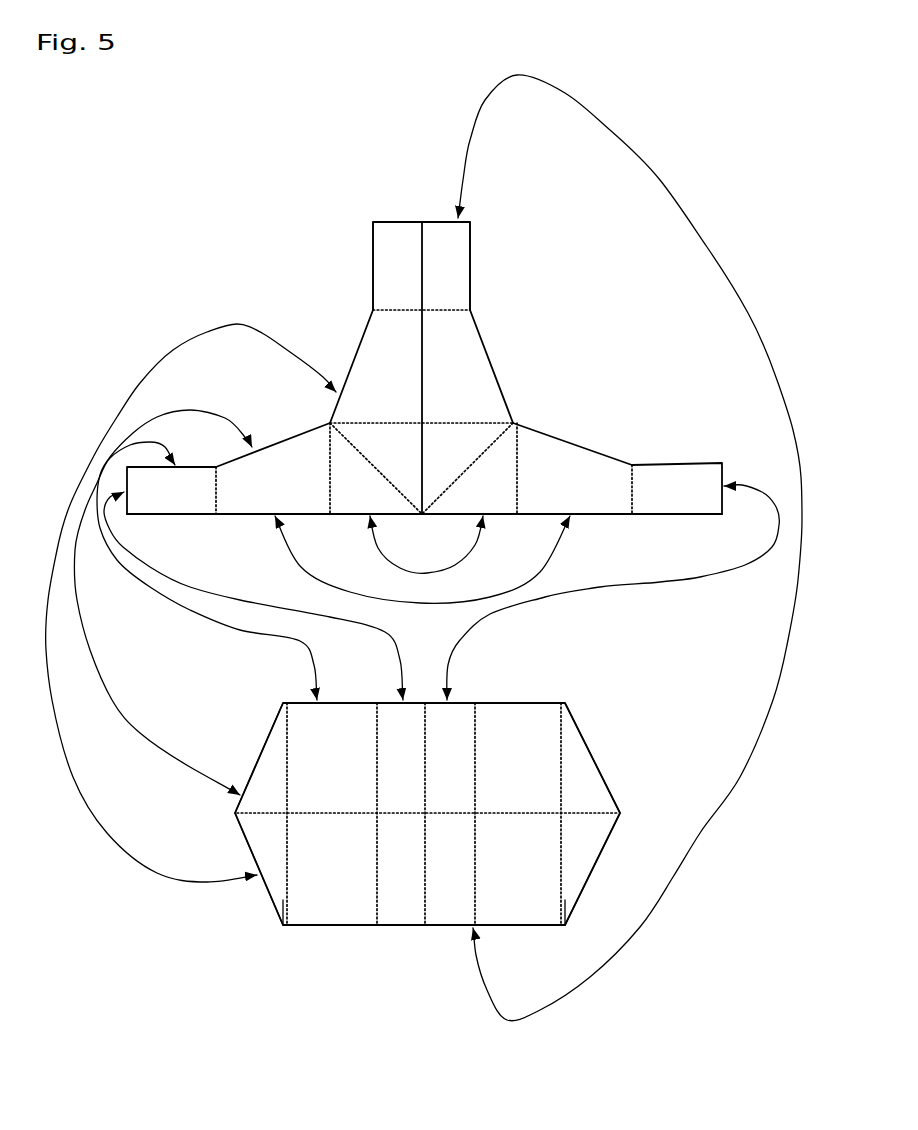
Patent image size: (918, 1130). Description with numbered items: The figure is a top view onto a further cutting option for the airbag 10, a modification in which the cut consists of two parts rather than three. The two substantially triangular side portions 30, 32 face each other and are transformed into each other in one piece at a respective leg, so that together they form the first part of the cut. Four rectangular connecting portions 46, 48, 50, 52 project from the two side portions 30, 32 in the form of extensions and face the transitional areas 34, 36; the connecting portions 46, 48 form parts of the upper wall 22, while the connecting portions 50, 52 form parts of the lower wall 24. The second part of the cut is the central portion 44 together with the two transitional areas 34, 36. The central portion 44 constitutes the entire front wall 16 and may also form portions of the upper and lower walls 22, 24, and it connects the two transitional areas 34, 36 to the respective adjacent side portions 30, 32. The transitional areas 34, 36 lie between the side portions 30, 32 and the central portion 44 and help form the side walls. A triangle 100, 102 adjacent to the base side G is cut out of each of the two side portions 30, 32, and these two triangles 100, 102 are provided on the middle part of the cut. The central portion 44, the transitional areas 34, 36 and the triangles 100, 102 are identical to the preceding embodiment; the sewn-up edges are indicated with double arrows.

The fuel cell stack assembly 10 is at (196, 247).
The front wall 16 is at (463, 809).
The upper wall 22 is at (469, 349).
The lower wall 24 is at (259, 502).
The side portion 30 is at (501, 461).
The side portion 32 is at (343, 460).
The transitional area 34 is at (363, 730).
The transitional area 36 is at (530, 727).
The central portion 44 is at (457, 918).
The connecting portion 46 is at (445, 265).
The connecting portion 48 is at (400, 262).
The connecting portion 50 is at (683, 488).
The connecting portion 52 is at (180, 478).
The triangle 100 is at (260, 814).
The triangle 102 is at (592, 814).
The base side G is at (287, 903).